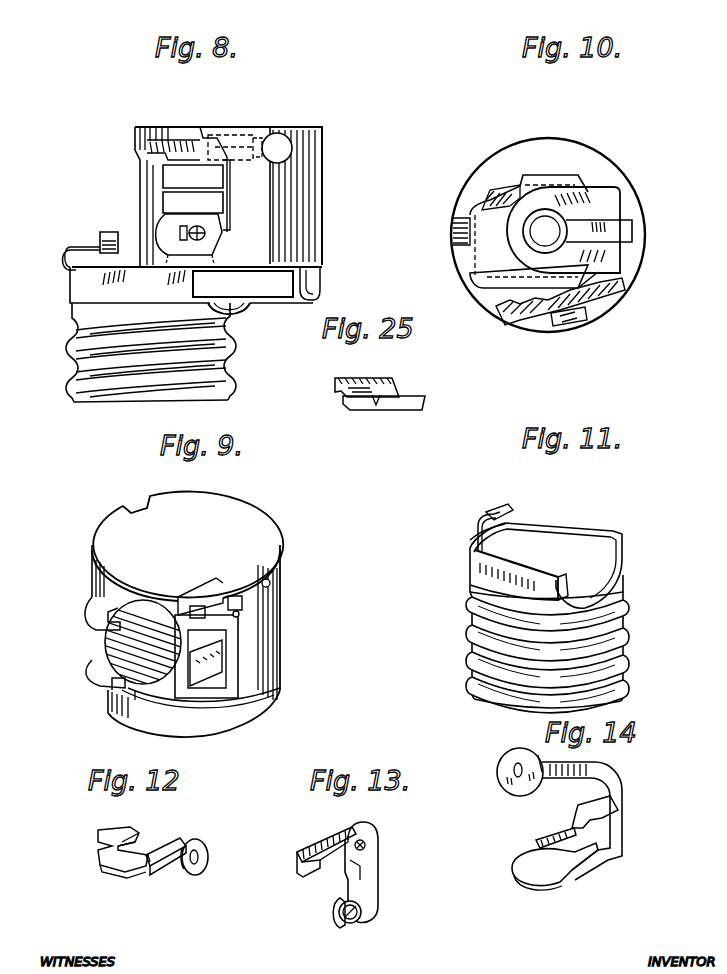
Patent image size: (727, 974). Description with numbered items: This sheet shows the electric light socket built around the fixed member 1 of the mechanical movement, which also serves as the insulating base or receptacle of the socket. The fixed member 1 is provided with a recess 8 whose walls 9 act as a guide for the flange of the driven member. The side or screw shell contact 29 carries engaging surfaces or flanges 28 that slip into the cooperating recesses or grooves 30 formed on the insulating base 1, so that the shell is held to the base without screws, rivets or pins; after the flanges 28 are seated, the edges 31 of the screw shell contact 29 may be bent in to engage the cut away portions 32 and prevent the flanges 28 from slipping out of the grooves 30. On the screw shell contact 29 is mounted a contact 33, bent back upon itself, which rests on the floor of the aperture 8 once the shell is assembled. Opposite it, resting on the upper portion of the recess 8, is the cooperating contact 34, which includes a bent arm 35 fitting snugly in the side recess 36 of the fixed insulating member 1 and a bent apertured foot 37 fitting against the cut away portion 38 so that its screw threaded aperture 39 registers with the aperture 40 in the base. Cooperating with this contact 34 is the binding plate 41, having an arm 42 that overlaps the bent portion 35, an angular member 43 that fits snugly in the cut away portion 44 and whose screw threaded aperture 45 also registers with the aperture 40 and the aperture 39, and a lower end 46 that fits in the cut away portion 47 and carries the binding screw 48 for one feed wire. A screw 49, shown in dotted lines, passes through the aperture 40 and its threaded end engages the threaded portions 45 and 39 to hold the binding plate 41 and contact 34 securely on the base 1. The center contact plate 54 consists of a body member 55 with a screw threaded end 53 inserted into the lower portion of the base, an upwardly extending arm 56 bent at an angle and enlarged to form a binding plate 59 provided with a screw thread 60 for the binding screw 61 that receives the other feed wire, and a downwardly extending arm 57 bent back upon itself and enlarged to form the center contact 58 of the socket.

In FIG. 8, the fixed member 1 is at (241, 126).
In FIG. 25, the fixed member 1 is at (422, 405).
In FIG. 9, the fixed member 1 is at (187, 615).
In FIG. 9, the recess 8 is at (145, 653).
In FIG. 9, the walls of the recess 9 is at (125, 592).
In FIG. 11, the engaging surfaces or flanges 28 is at (584, 529).
In FIG. 8, the screw shell contact 29 is at (78, 373).
In FIG. 11, the screw shell contact 29 is at (478, 644).
In FIG. 8, the recesses or grooves 30 is at (236, 269).
In FIG. 10, the recesses or grooves 30 is at (516, 182).
In FIG. 25, the edges of the screw shell 31 is at (397, 385).
In FIG. 11, the edges of the screw shell 31 is at (620, 548).
In FIG. 8, the cut away portions 32 is at (298, 283).
In FIG. 10, the cut away portions 32 is at (580, 196).
In FIG. 25, the cut away portions 32 is at (378, 397).
In FIG. 9, the cut away portions 32 is at (262, 700).
In FIG. 8, the contact 33 is at (100, 240).
In FIG. 11, the contact 33 is at (506, 508).
In FIG. 12, the cooperating contact 34 is at (120, 838).
In FIG. 12, the bent arm 35 is at (166, 862).
In FIG. 9, the side recess 36 is at (199, 610).
In FIG. 12, the bent apertured foot 37 is at (199, 844).
In FIG. 9, the cut away portion 38 is at (242, 604).
In FIG. 12, the screw threaded aperture 39 is at (200, 872).
In FIG. 8, the aperture 40 is at (288, 146).
In FIG. 9, the aperture 40 is at (270, 583).
In FIG. 13, the binding plate 41 is at (383, 872).
In FIG. 8, the arm 42 is at (179, 146).
In FIG. 13, the arm 42 is at (322, 830).
In FIG. 8, the angular member 43 is at (222, 176).
In FIG. 13, the angular member 43 is at (368, 872).
In FIG. 9, the cut away portion 44 is at (240, 655).
In FIG. 13, the screw threaded aperture 45 is at (367, 843).
In FIG. 8, the lower end 46 is at (212, 212).
In FIG. 13, the lower end 46 is at (350, 926).
In FIG. 9, the cut away portion 47 is at (205, 663).
In FIG. 8, the binding screw 48 is at (185, 233).
In FIG. 13, the binding screw 48 is at (362, 914).
In FIG. 8, the screw 49 is at (260, 134).
In FIG. 14, the screw threaded end 53 is at (537, 836).
In FIG. 14, the center contact plate 54 is at (631, 822).
In FIG. 14, the body member 55 is at (592, 808).
In FIG. 14, the upper arm 56 is at (606, 778).
In FIG. 8, the lower arm 57 is at (315, 299).
In FIG. 14, the lower arm 57 is at (620, 840).
In FIG. 8, the center contact 58 is at (237, 311).
In FIG. 10, the center contact 58 is at (577, 237).
In FIG. 14, the center contact 58 is at (548, 886).
In FIG. 10, the binding plate 59 is at (552, 323).
In FIG. 14, the binding plate 59 is at (512, 754).
In FIG. 14, the screw thread 60 is at (510, 775).
In FIG. 10, the binding screw 61 is at (593, 323).